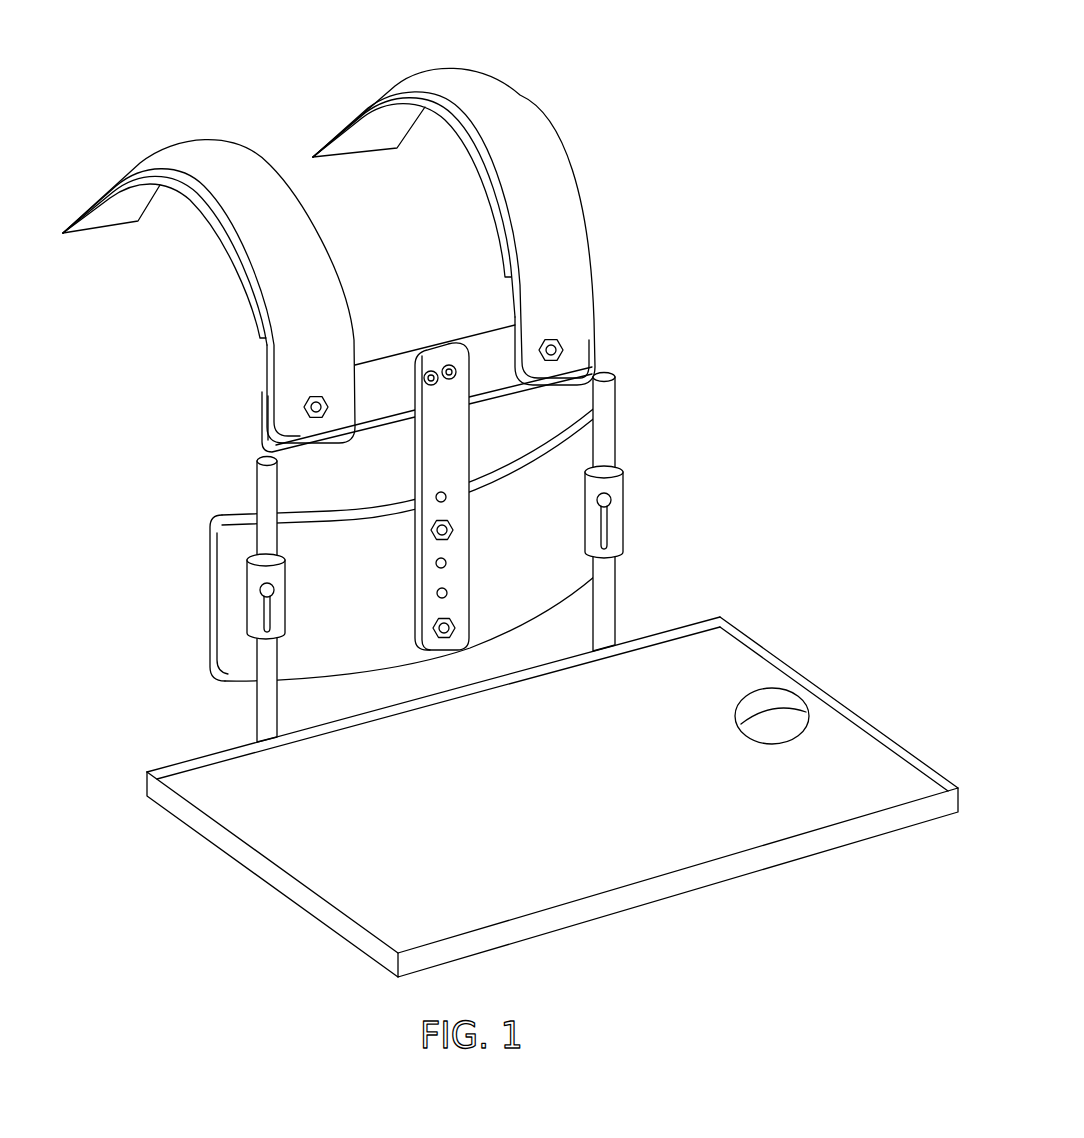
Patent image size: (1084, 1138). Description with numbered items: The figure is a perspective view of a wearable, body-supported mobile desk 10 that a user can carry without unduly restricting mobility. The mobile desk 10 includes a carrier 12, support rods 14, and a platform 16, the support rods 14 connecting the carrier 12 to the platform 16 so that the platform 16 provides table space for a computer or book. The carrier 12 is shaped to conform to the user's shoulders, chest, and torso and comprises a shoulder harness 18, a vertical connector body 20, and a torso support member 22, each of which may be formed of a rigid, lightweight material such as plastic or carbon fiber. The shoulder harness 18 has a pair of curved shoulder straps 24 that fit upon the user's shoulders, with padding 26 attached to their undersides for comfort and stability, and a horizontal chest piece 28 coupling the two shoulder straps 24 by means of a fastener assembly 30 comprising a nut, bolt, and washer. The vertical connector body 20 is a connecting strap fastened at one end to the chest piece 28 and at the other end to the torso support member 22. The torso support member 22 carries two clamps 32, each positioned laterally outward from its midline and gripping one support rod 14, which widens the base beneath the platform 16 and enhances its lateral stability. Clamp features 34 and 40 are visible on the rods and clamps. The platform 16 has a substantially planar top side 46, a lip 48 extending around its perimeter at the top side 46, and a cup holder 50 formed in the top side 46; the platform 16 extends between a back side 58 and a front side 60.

The mobile desk 10 is at (94, 93).
The carrier 12 is at (689, 357).
The support rods 14 is at (618, 590).
The platform 16 is at (228, 846).
The shoulder harness 18 is at (663, 168).
The vertical connector body 20 is at (475, 440).
The torso support member 22 is at (212, 572).
The curved shoulder straps 24 is at (545, 110).
The padding 26 is at (488, 204).
The horizontal chest piece 28 is at (383, 355).
The fastener assembly 30 is at (305, 400).
The clamps 32 is at (622, 495).
The rod upper end 34 is at (616, 415).
The collar slot 40 is at (613, 530).
The top side 46 is at (735, 655).
The lip 48 is at (168, 762).
The cup holder 50 is at (760, 747).
The back side 58 is at (332, 712).
The front side 60 is at (690, 880).